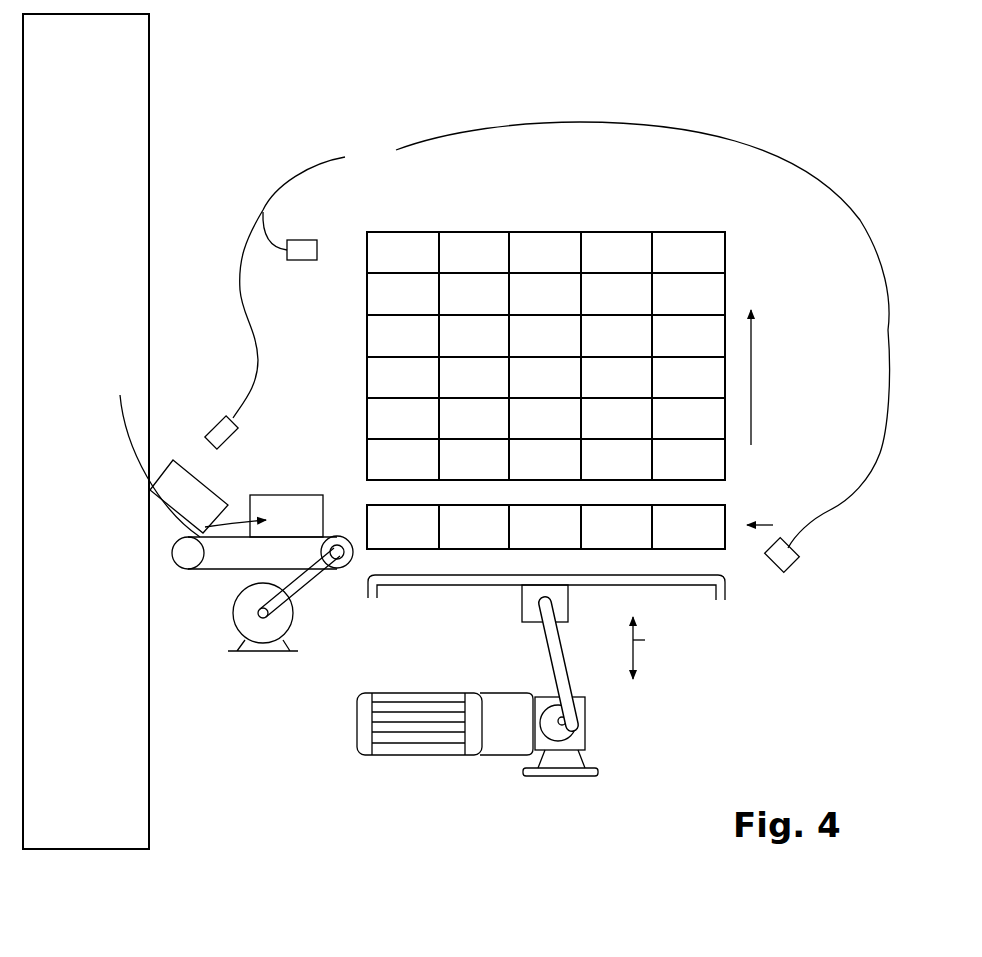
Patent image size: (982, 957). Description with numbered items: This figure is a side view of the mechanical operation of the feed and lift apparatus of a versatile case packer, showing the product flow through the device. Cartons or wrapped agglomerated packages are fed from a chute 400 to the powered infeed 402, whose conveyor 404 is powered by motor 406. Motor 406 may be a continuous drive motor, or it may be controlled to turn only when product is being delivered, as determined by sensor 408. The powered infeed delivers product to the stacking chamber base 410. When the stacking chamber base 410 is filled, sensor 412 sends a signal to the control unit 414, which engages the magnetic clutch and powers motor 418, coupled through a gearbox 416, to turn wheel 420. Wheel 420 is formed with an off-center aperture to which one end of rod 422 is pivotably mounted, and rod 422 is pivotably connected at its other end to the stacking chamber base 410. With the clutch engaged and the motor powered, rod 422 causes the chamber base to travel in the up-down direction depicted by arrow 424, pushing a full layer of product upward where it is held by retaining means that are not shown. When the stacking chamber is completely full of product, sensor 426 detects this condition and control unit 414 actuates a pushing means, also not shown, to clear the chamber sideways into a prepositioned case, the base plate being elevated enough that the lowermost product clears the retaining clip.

The chute 400 is at (110, 283).
The powered infeed 402 is at (232, 533).
The conveyor 404 is at (200, 568).
The motor 406 is at (267, 645).
The sensor 408 is at (210, 420).
The stacking chamber base 410 is at (695, 595).
The sensor 412 is at (797, 563).
The control unit 414 is at (561, 335).
The gearbox 416 is at (498, 755).
The motor 418 is at (418, 757).
The wheel 420 is at (585, 730).
The rod 422 is at (563, 647).
The arrow 424 is at (645, 640).
The sensor 426 is at (300, 260).